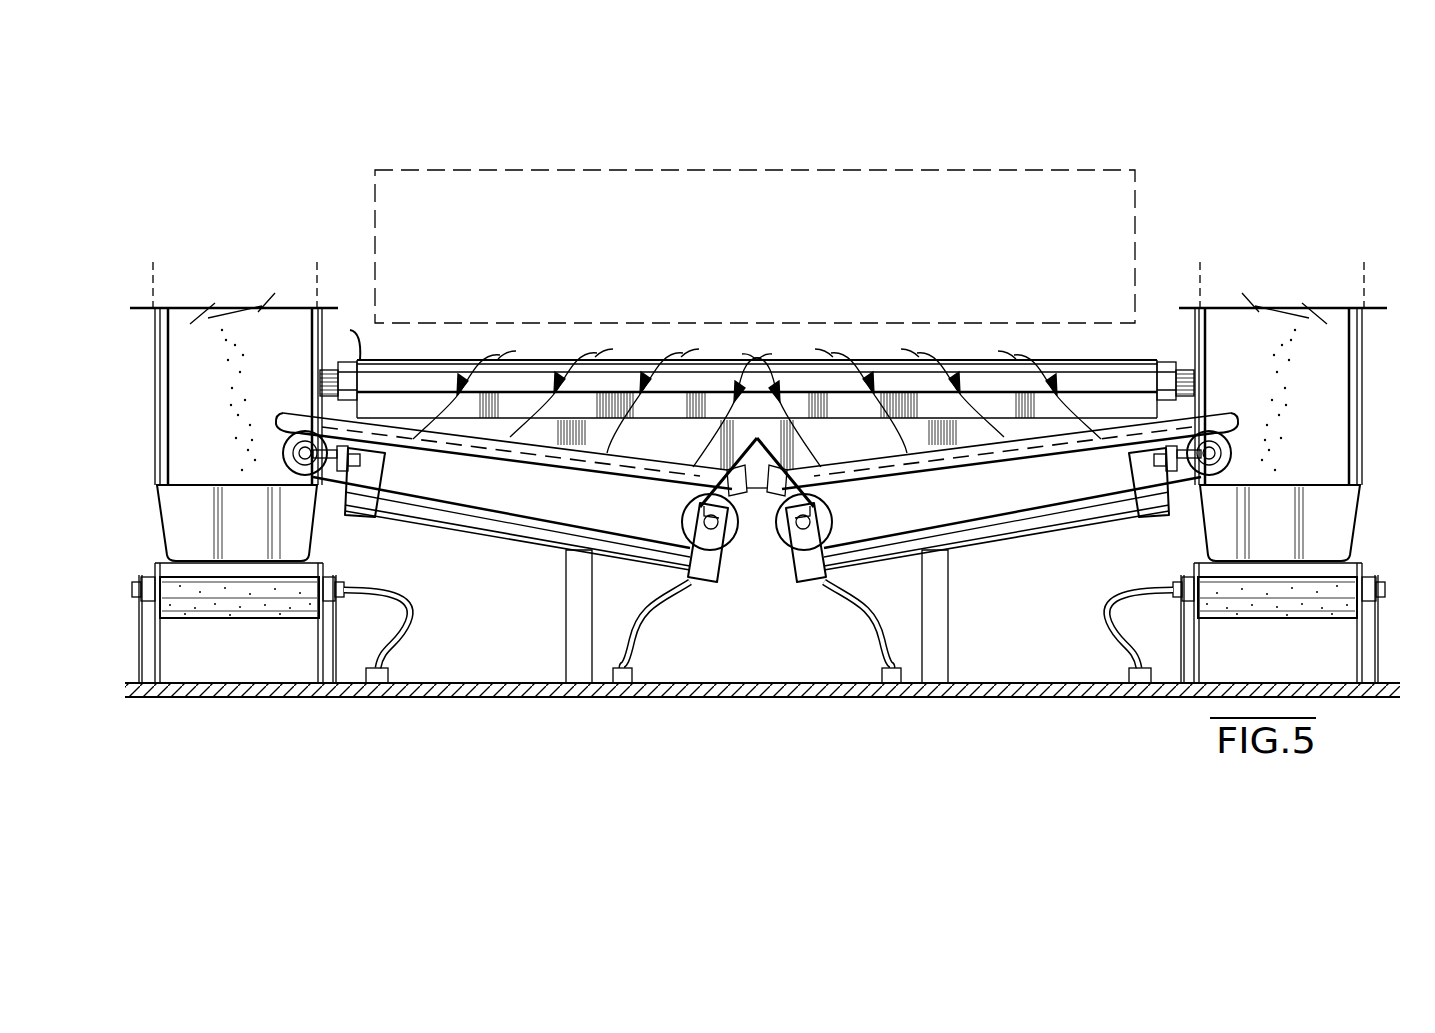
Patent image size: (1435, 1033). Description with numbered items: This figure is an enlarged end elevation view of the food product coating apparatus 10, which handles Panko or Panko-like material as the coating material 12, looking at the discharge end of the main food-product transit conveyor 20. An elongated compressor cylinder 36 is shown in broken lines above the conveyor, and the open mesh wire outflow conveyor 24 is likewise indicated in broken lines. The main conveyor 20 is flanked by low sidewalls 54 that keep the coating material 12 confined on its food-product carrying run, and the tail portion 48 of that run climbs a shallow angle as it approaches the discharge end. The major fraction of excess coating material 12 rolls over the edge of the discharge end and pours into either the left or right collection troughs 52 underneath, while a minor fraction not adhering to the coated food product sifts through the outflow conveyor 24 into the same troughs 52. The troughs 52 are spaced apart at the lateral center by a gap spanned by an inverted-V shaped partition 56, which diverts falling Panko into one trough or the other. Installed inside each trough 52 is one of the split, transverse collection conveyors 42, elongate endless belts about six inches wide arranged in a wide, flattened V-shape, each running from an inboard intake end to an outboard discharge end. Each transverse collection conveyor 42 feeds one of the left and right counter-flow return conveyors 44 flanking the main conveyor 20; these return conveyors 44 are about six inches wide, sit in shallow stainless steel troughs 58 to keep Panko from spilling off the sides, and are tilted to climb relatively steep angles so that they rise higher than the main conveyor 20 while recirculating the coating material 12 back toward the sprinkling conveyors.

The food product coating apparatus 10 is at (774, 409).
The coating material 12 is at (262, 515).
The main food-product transit conveyor 20 is at (757, 327).
The outflow conveyor 24 is at (757, 327).
The tail portion 48 is at (527, 377).
The compressor cylinder 36 is at (378, 268).
The transverse collection conveyor 42 is at (525, 515).
The counter-flow return conveyor 44 is at (777, 488).
The collection trough 52 is at (856, 463).
The low sidewall 54 is at (358, 335).
The inverted-V shaped partition 56 is at (757, 445).
The stainless steel trough 58 is at (1340, 496).